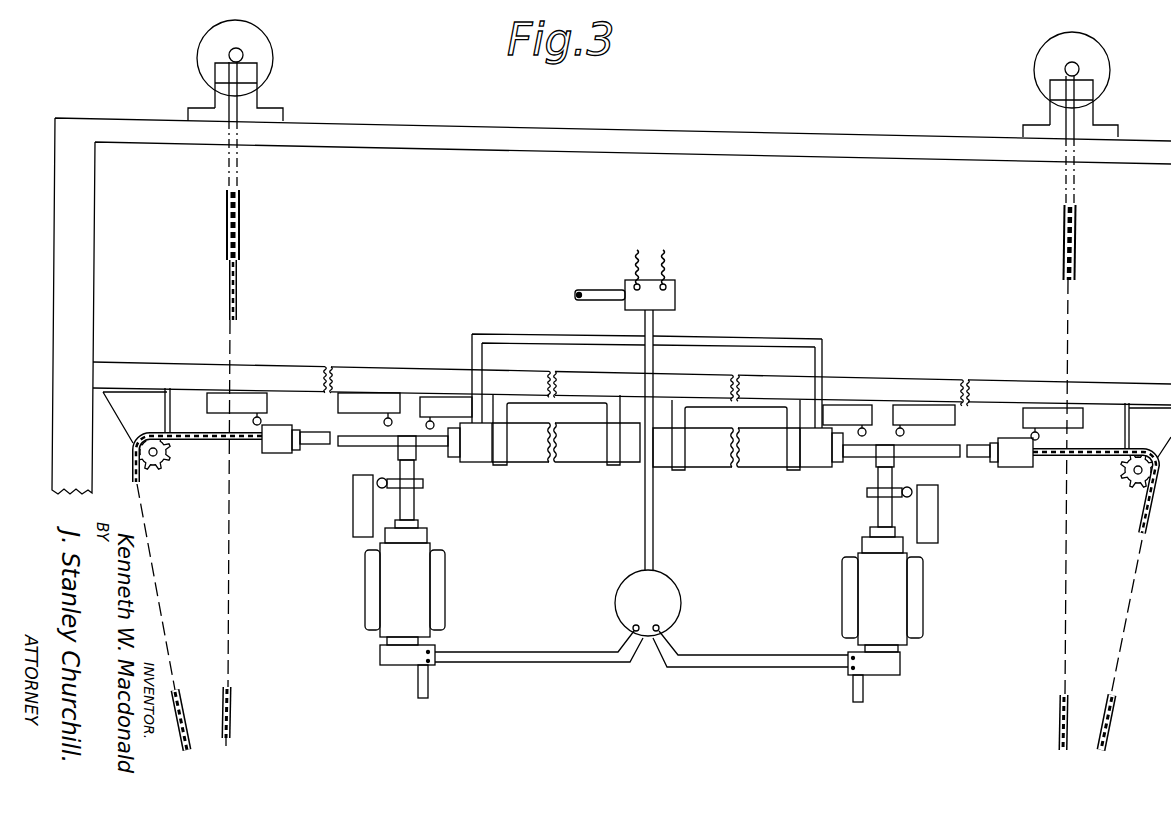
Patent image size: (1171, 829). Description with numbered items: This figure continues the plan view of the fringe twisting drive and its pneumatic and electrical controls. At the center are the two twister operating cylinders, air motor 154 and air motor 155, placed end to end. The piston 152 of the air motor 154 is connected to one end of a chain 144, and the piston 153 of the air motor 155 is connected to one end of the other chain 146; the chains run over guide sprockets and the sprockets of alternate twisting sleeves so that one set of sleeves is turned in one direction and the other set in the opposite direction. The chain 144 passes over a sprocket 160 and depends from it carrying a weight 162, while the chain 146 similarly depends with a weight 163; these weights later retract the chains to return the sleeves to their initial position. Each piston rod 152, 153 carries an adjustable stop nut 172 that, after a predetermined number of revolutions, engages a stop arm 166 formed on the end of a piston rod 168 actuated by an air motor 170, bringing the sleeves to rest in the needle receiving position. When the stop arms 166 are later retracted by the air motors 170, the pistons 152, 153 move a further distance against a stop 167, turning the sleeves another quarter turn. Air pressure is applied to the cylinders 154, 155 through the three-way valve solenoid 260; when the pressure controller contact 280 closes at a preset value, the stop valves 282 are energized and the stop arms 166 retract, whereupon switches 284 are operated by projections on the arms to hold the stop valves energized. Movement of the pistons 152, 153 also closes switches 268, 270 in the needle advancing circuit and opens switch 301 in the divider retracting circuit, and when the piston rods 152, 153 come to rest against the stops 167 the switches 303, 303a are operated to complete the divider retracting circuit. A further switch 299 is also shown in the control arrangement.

The chain 144 is at (190, 746).
The chain 146 is at (228, 713).
The piston 152 is at (345, 447).
The piston 153 is at (987, 458).
The air motor 154 is at (537, 459).
The air motor 155 is at (765, 463).
The sprocket 160 is at (1076, 113).
The weight 162 is at (1050, 47).
The weight 163 is at (261, 41).
The stop arm 166 is at (417, 456).
The stop 167 is at (455, 453).
The piston rod 168 is at (408, 506).
The air motor 170 is at (417, 600).
The stop nut 172 is at (298, 412).
The three-way valve solenoid 260 is at (677, 285).
The switch 268 is at (924, 420).
The switch 270 is at (369, 409).
The pressure controller contact 280 is at (668, 595).
The stop valve 282 is at (383, 658).
The switch 284 is at (355, 518).
The valve 299 is at (847, 420).
The switch 301 is at (446, 413).
The switch 303 is at (1053, 424).
The switch 303a is at (237, 409).